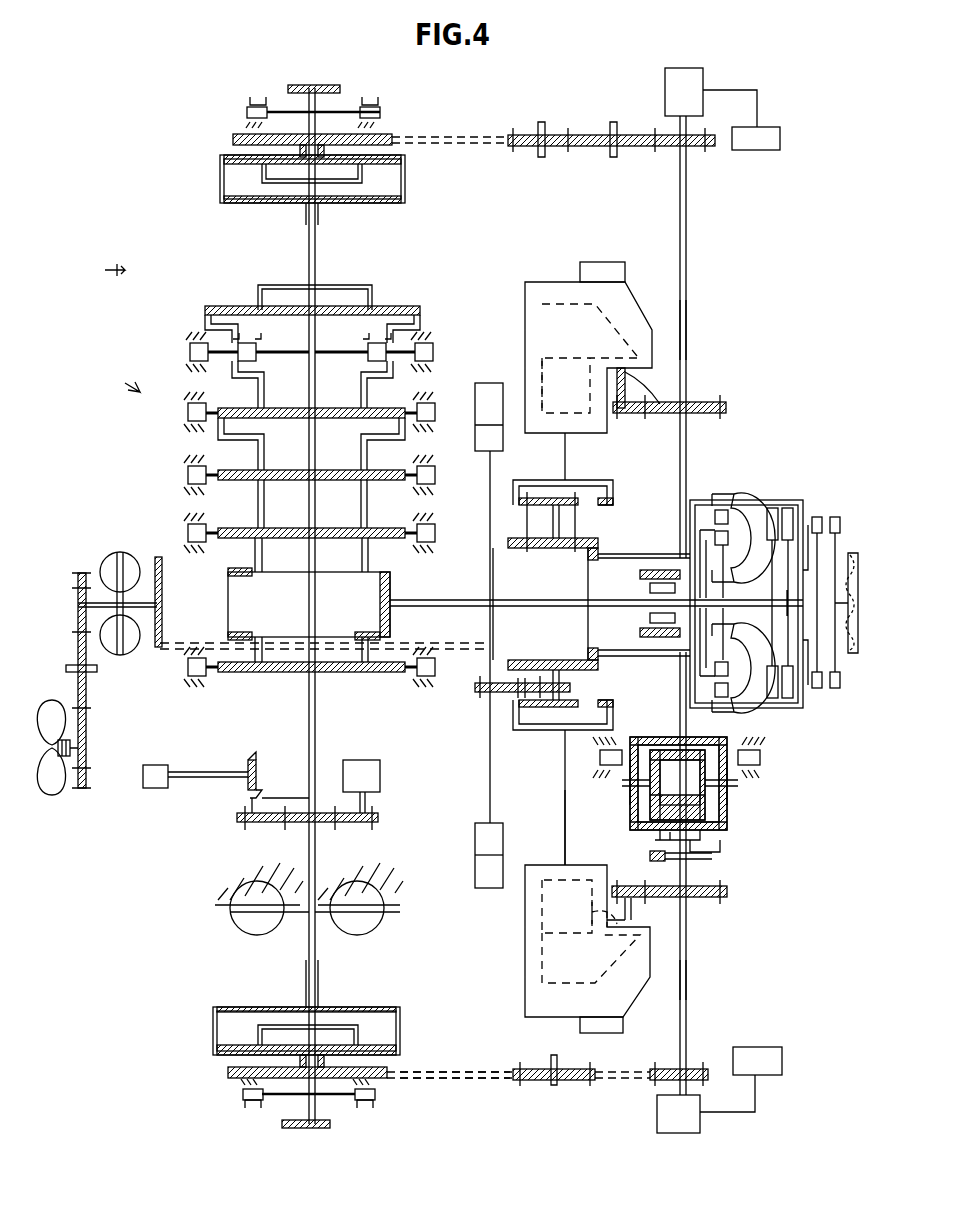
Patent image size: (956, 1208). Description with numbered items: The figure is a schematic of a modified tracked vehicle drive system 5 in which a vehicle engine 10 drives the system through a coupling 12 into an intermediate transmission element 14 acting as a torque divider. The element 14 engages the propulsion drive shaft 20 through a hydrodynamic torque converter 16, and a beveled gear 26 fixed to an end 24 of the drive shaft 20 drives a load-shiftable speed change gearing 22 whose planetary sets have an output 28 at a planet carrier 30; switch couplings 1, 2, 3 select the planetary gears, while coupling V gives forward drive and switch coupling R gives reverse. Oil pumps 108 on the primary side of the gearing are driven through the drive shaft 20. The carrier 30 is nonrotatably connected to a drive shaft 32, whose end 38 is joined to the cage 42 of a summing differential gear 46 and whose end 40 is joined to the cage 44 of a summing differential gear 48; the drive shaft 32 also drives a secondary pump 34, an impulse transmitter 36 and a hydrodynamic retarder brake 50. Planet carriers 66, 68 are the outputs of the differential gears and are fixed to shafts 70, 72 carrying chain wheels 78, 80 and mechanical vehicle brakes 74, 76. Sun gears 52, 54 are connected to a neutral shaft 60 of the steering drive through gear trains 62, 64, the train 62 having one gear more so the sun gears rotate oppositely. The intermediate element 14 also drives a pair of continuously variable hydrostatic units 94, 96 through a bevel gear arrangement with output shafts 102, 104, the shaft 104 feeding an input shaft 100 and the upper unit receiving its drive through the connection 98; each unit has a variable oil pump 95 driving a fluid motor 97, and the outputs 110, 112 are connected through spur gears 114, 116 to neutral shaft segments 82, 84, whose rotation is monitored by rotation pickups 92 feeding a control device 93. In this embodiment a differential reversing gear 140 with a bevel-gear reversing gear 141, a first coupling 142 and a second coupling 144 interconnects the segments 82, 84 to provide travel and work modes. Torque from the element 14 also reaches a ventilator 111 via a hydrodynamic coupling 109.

The switch coupling for first planetary gear 1 is at (188, 352).
The switch coupling for second planetary gear 2 is at (186, 413).
The switch coupling for third planetary gear 3 is at (186, 475).
The switch coupling R is at (186, 533).
The coupling V is at (186, 667).
The tracked vehicle drive system 5 is at (106, 270).
The vehicle engine 10 is at (852, 550).
The coupling 12 is at (817, 500).
The intermediate transmission element 14 is at (773, 500).
The hydrodynamic torque converter 16 is at (728, 500).
The propulsion drive shaft 20 is at (536, 600).
The speed change gearing 22 is at (138, 392).
The end of drive shaft 24 is at (390, 594).
The beveled gear 26 is at (390, 613).
The output 28 is at (309, 285).
The planet carrier 30 is at (246, 301).
The drive shaft 32 is at (320, 234).
The secondary pump 34 is at (363, 766).
The impulse transmitter 36 is at (152, 788).
The end of drive shaft 38 is at (307, 207).
The end of drive shaft 40 is at (316, 982).
The cage 42 is at (220, 163).
The cage 44 is at (213, 1022).
The summing differential gear 46 is at (388, 184).
The summing differential gear 48 is at (400, 1025).
The hydrodynamic retarder brake 50 is at (378, 926).
The sun gear 52 is at (281, 138).
The sun gear 54 is at (300, 1080).
The neutral shaft 60 is at (686, 253).
The gear train 62 is at (555, 132).
The gear train 64 is at (535, 1080).
The planet carrier 66 is at (272, 184).
The planet carrier 68 is at (263, 1028).
The shaft 70 is at (280, 100).
The shaft 72 is at (330, 1095).
The mechanical vehicle brake 74 is at (380, 110).
The mechanical vehicle brake 76 is at (242, 1101).
The chain wheel 78 is at (312, 84).
The chain wheel 80 is at (294, 1128).
The neutral shaft segment 82 is at (686, 321).
The neutral shaft segment 84 is at (684, 981).
The rotation pickup 92 is at (665, 85).
The control device 93 is at (752, 140).
The hydrostatic unit 94 is at (550, 284).
The variable oil pump 95 is at (542, 415).
The hydrostatic unit 96 is at (537, 1015).
The fluid motor 97 is at (601, 327).
The push rod 98 is at (565, 435).
The input shaft 100 is at (555, 865).
The output shaft 102 is at (561, 520).
The output shaft 104 is at (566, 687).
The oil pumps 108 is at (490, 383).
The hydrodynamic coupling 109 is at (111, 560).
The output 110 is at (647, 408).
The ventilator 111 is at (52, 792).
The output 112 is at (582, 911).
The spur gear 114 is at (713, 402).
The spur gear 116 is at (722, 897).
The differential reversing gear 140 is at (756, 802).
The reversing gear 141 is at (715, 814).
The first coupling 142 is at (715, 857).
The second coupling 144 is at (763, 759).